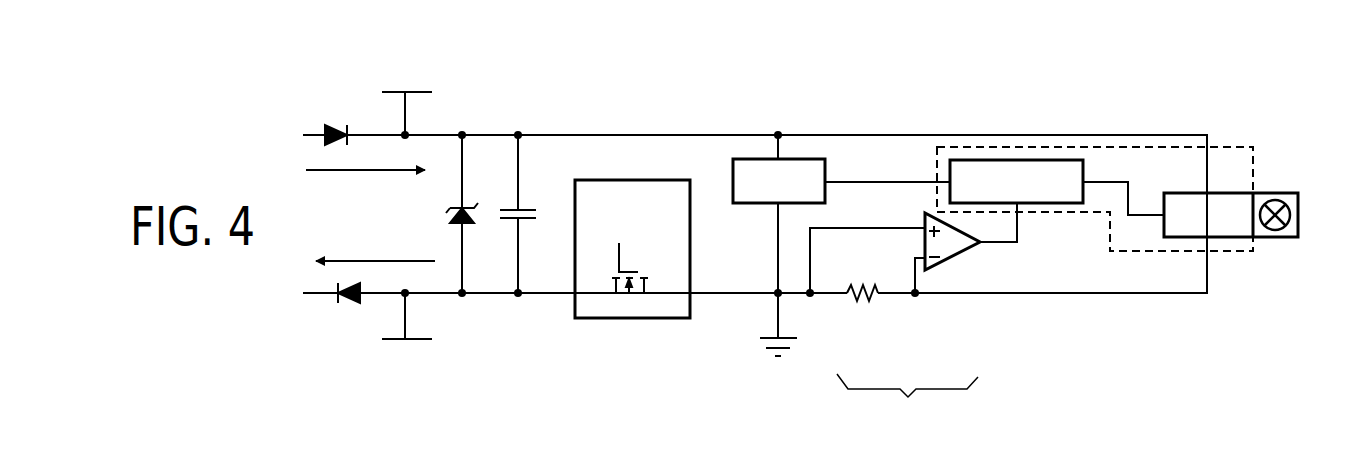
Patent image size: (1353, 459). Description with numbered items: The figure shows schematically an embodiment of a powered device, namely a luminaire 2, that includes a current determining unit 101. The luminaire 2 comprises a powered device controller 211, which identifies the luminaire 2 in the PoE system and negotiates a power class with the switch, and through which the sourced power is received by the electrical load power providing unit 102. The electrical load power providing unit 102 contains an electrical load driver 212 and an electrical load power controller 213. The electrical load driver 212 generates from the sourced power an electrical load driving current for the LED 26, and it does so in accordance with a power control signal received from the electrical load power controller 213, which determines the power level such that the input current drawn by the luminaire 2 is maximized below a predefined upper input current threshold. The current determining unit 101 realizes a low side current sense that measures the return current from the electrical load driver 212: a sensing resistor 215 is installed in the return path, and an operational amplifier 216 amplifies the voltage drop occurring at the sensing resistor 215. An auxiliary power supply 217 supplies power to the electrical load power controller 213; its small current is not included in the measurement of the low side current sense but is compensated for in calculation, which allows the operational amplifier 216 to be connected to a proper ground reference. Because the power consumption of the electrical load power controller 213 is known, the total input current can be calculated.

The luminaire 2 is at (662, 86).
The powered device controller 211 is at (637, 318).
The auxiliary power supply 217 is at (798, 159).
The electrical load power controller 213 is at (1030, 160).
The electrical load power providing unit 102 is at (1232, 147).
The electrical load driver 212 is at (1240, 237).
The LED 26 is at (1280, 238).
The sensing resistor 215 is at (858, 310).
The operational amplifier 216 is at (957, 264).
The current determining unit 101 is at (907, 405).